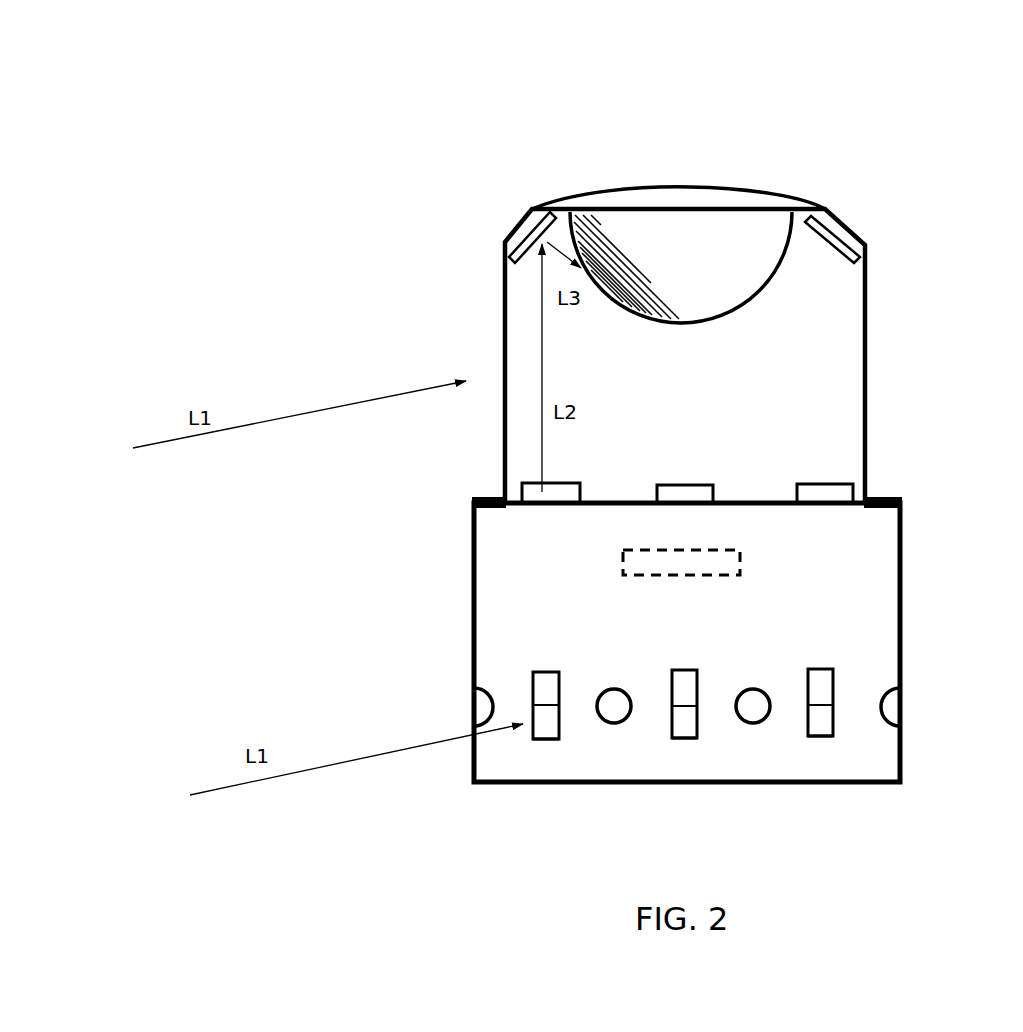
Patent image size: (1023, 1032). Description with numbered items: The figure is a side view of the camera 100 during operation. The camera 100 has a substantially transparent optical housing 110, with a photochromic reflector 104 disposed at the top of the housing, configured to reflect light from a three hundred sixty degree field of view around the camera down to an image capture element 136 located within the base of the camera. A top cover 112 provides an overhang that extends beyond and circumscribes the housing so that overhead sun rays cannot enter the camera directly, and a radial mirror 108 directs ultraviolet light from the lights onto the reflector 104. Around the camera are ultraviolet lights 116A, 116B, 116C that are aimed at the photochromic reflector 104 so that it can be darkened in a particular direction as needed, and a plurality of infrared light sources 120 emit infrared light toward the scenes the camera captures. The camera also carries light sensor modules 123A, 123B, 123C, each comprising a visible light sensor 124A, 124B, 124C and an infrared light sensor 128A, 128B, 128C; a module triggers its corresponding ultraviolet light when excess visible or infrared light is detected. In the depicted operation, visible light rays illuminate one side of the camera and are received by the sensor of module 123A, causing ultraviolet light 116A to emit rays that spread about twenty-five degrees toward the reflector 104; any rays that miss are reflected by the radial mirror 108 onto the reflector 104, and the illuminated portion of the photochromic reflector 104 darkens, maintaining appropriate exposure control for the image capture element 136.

The camera 100 is at (424, 108).
The photochromic reflector 104 is at (740, 288).
The radial mirror 108 is at (533, 254).
The optical housing 110 is at (503, 385).
The top cover 112 is at (686, 196).
The UV light 116A is at (542, 492).
The UV light 116B is at (688, 490).
The UV light 116C is at (832, 493).
The IR light sources 120 is at (613, 697).
The sensor module 123A is at (569, 718).
The sensor module 123B is at (701, 713).
The sensor module 123C is at (844, 691).
The visible light sensor 124A is at (550, 680).
The visible light sensor 124B is at (688, 685).
The visible light sensor 124C is at (818, 680).
The infrared light sensor 128A is at (550, 738).
The infrared light sensor 128B is at (684, 738).
The infrared light sensor 128C is at (822, 738).
The image capture element 136 is at (728, 552).